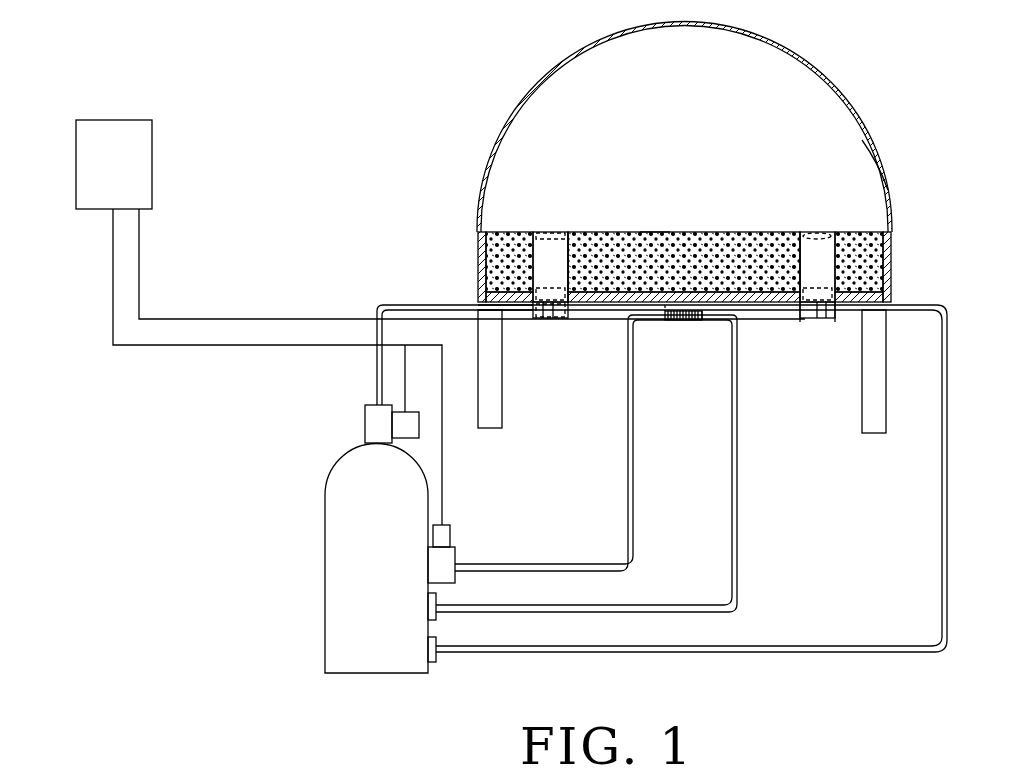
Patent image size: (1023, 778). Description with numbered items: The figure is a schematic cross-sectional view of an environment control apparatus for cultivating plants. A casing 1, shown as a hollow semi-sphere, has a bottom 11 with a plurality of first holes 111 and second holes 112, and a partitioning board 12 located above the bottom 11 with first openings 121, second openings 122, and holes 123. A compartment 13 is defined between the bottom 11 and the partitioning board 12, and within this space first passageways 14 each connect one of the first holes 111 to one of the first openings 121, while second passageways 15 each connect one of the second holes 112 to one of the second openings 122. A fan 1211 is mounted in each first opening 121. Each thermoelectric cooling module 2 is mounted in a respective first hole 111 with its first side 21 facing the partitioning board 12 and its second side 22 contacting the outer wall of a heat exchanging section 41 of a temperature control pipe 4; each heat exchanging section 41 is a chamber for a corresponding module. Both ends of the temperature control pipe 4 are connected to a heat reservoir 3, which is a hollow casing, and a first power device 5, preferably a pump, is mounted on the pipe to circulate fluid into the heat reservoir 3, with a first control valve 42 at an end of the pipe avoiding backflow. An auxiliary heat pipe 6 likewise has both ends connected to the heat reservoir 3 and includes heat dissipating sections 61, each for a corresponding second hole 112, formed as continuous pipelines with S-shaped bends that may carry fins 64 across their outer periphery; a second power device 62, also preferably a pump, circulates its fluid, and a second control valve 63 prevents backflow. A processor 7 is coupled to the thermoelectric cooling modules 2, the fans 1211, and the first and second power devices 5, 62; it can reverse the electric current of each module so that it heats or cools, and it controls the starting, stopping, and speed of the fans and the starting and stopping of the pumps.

The casing 1 is at (810, 66).
The bottom 11 is at (882, 278).
The first holes 111 is at (802, 320).
The second holes 112 is at (668, 322).
The partitioning board 12 is at (880, 212).
The first openings 121 is at (550, 232).
The fan 1211 is at (535, 232).
The second openings 122 is at (680, 232).
The holes 123 is at (880, 180).
The compartment 13 is at (482, 240).
The first passageways 14 is at (576, 232).
The second passageways 15 is at (655, 232).
The thermoelectric cooling module 2 is at (478, 286).
The first side 21 is at (478, 262).
The second side 22 is at (541, 320).
The heat reservoir 3 is at (337, 551).
The temperature control pipe 4 is at (947, 380).
The heat exchanging section 41 is at (565, 318).
The first control valve 42 is at (433, 655).
The first power device 5 is at (372, 420).
The auxiliary heat pipe 6 is at (737, 505).
The heat dissipating section 61 is at (704, 322).
The second power device 62 is at (443, 558).
The second control valve 63 is at (433, 610).
The fins 64 is at (690, 322).
The processor 7 is at (147, 150).